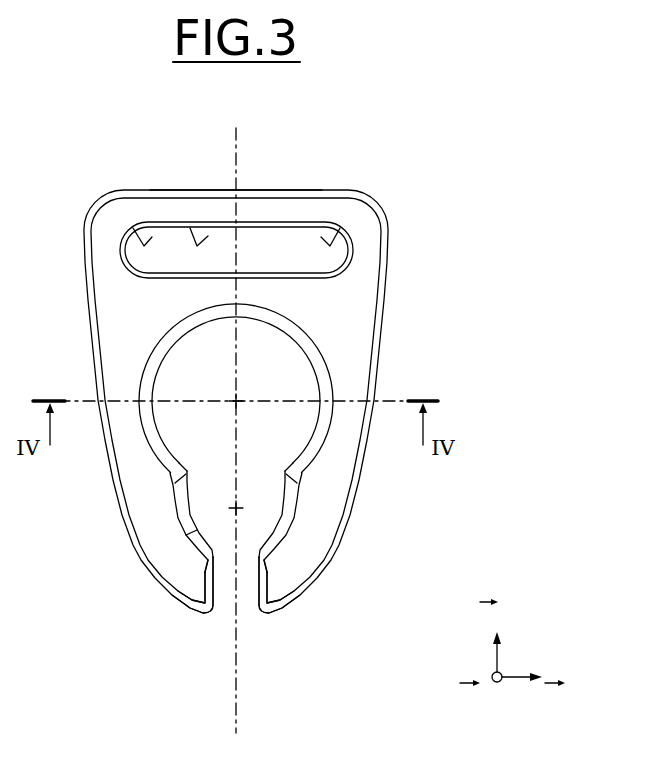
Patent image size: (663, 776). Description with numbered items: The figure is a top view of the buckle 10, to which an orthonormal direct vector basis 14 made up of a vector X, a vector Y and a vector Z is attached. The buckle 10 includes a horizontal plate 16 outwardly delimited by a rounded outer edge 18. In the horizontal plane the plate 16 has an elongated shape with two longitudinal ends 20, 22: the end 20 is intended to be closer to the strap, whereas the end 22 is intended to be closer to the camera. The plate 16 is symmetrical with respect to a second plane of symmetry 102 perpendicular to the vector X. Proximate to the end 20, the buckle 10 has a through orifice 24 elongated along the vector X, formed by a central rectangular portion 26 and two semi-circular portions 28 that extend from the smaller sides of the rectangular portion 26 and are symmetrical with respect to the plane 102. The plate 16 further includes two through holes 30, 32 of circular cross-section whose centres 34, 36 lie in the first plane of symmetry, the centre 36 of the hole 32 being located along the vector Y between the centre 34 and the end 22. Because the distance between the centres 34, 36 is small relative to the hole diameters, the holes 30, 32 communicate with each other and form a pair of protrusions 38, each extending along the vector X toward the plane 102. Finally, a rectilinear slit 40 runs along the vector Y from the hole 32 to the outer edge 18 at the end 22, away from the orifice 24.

The buckle 10 is at (411, 148).
The orthonormal direct vector basis 14 is at (547, 611).
The horizontal plate 16 is at (325, 337).
The outer edge 18 is at (364, 472).
The longitudinal end 20 is at (260, 190).
The longitudinal end 22 is at (261, 610).
The through orifice 24 is at (285, 236).
The central rectangular portion 26 is at (198, 232).
The semi-circular portions 28 is at (146, 232).
The through hole 30 is at (172, 449).
The through hole 32 is at (180, 542).
The centre 34 is at (238, 399).
The centre 36 is at (240, 512).
The protrusions 38 is at (182, 474).
The slit 40 is at (215, 582).
The second plane of symmetry 102 is at (240, 712).